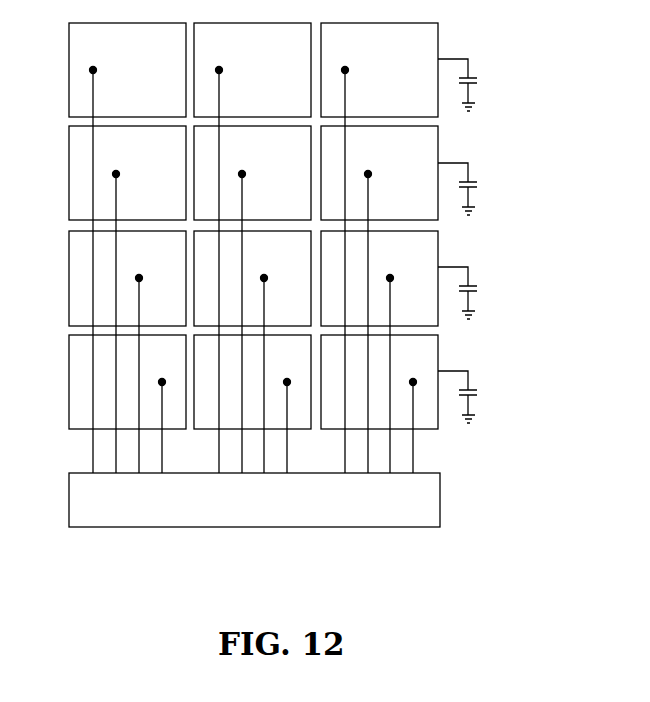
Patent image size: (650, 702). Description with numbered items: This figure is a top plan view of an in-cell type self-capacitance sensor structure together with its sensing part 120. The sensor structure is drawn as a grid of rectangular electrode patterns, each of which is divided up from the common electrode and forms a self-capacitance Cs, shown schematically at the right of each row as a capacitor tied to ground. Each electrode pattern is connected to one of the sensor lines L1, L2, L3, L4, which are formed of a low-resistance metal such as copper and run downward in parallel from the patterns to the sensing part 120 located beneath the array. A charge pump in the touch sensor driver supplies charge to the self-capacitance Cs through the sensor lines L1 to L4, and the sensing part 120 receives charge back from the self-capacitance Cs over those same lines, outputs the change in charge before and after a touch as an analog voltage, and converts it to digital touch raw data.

The sensor line L1 is at (93, 438).
The sensor line L2 is at (117, 455).
The sensor line L3 is at (138, 460).
The sensor line L4 is at (163, 460).
The self-capacitance Cs is at (469, 241).
The sensing part 120 is at (440, 500).